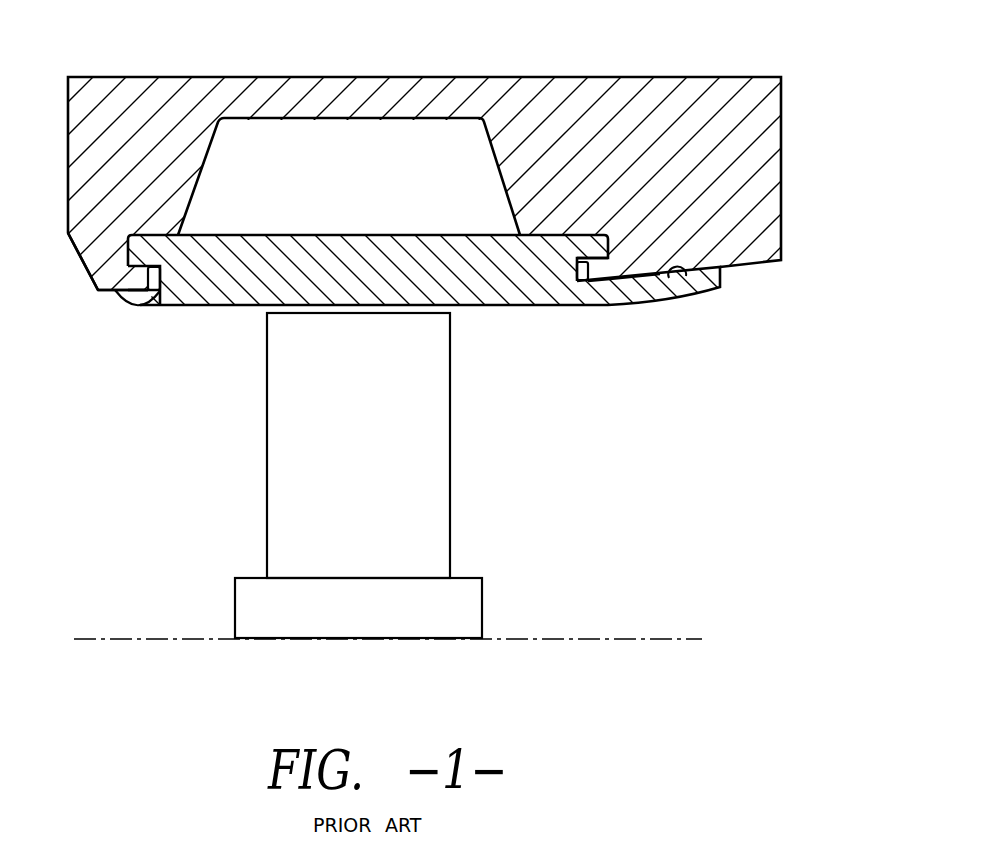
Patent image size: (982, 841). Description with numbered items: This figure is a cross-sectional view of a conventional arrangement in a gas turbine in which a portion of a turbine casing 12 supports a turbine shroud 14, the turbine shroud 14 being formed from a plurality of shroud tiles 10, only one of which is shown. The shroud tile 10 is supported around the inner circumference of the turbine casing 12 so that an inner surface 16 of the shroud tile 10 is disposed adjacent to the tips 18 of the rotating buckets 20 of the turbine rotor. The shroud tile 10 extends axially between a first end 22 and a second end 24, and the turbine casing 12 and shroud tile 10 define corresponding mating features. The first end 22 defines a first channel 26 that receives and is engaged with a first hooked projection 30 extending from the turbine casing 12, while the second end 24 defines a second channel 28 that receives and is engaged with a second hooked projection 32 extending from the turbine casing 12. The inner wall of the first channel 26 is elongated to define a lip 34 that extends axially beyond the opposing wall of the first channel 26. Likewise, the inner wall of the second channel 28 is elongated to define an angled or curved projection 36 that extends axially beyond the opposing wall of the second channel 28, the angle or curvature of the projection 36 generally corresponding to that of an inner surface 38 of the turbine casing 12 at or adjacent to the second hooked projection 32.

The shroud tile 10 is at (352, 234).
The turbine casing 12 is at (308, 77).
The turbine shroud 14 is at (503, 348).
The inner surface 16 is at (237, 305).
The tips 18 is at (302, 313).
The rotating buckets 20 is at (267, 515).
The first end 22 is at (128, 253).
The second end 24 is at (723, 275).
The first channel 26 is at (165, 303).
The second channel 28 is at (580, 270).
The first hooked projection 30 is at (140, 304).
The second hooked projection 32 is at (600, 272).
The lip 34 is at (125, 303).
The angled or curved projection 36 is at (647, 290).
The inner surface 38 is at (686, 277).